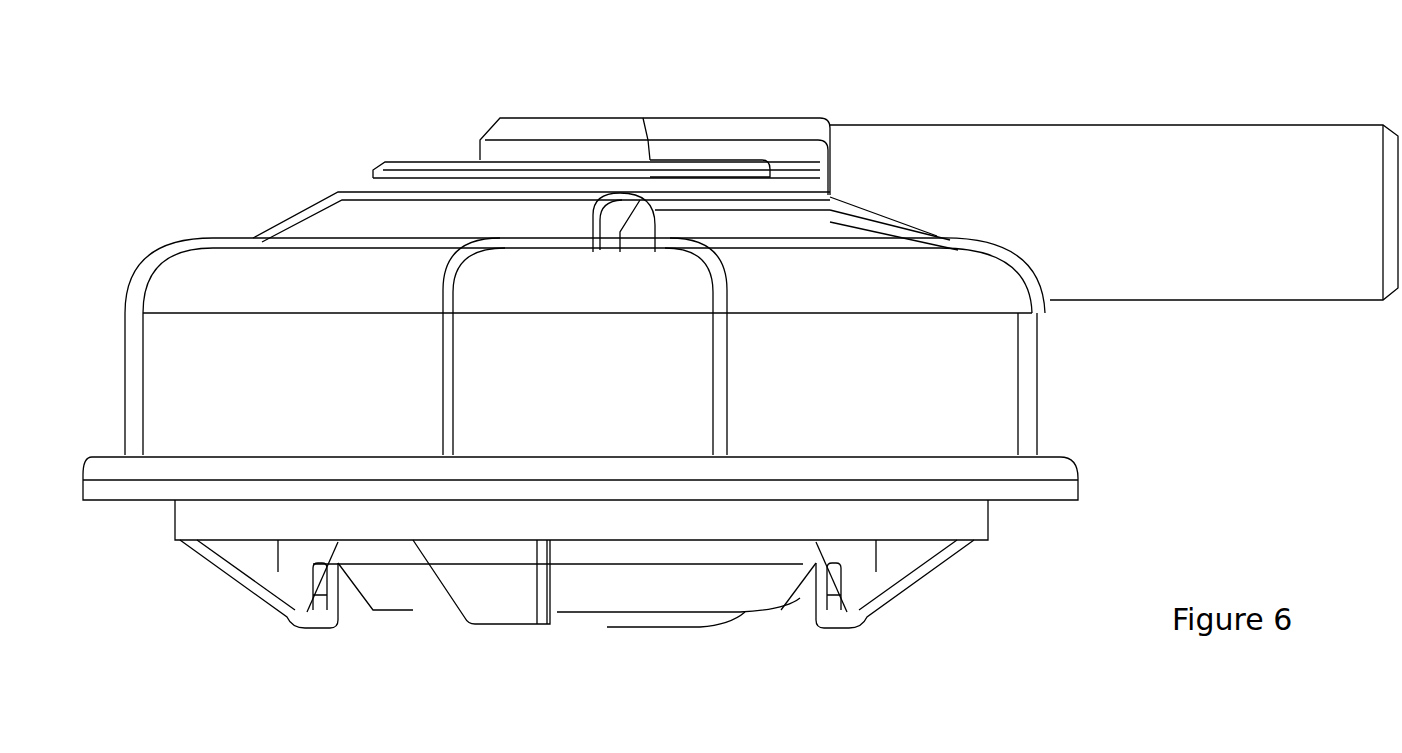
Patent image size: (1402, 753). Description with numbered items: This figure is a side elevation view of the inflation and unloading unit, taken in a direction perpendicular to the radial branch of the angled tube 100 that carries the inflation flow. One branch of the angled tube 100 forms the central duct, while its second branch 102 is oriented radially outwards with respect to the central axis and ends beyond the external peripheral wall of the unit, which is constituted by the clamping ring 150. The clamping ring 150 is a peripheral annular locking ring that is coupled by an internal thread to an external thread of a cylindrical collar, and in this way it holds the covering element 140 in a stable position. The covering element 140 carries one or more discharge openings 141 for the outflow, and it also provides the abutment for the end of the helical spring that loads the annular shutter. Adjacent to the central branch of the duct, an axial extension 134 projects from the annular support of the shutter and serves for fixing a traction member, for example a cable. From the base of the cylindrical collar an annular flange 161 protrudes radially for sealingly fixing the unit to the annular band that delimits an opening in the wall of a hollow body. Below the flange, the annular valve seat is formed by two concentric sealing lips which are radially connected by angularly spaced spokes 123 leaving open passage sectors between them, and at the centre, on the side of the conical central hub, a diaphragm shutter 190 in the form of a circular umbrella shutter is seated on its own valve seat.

The angled tube 100 is at (887, 118).
The second branch 102 is at (1167, 140).
The spokes 123 is at (263, 558).
The axial extension 134 is at (420, 160).
The covering element 140 is at (332, 195).
The discharge openings 141 is at (730, 232).
The clamping ring 150 is at (158, 267).
The annular flange 161 is at (1063, 463).
The diaphragm shutter 190 is at (751, 606).